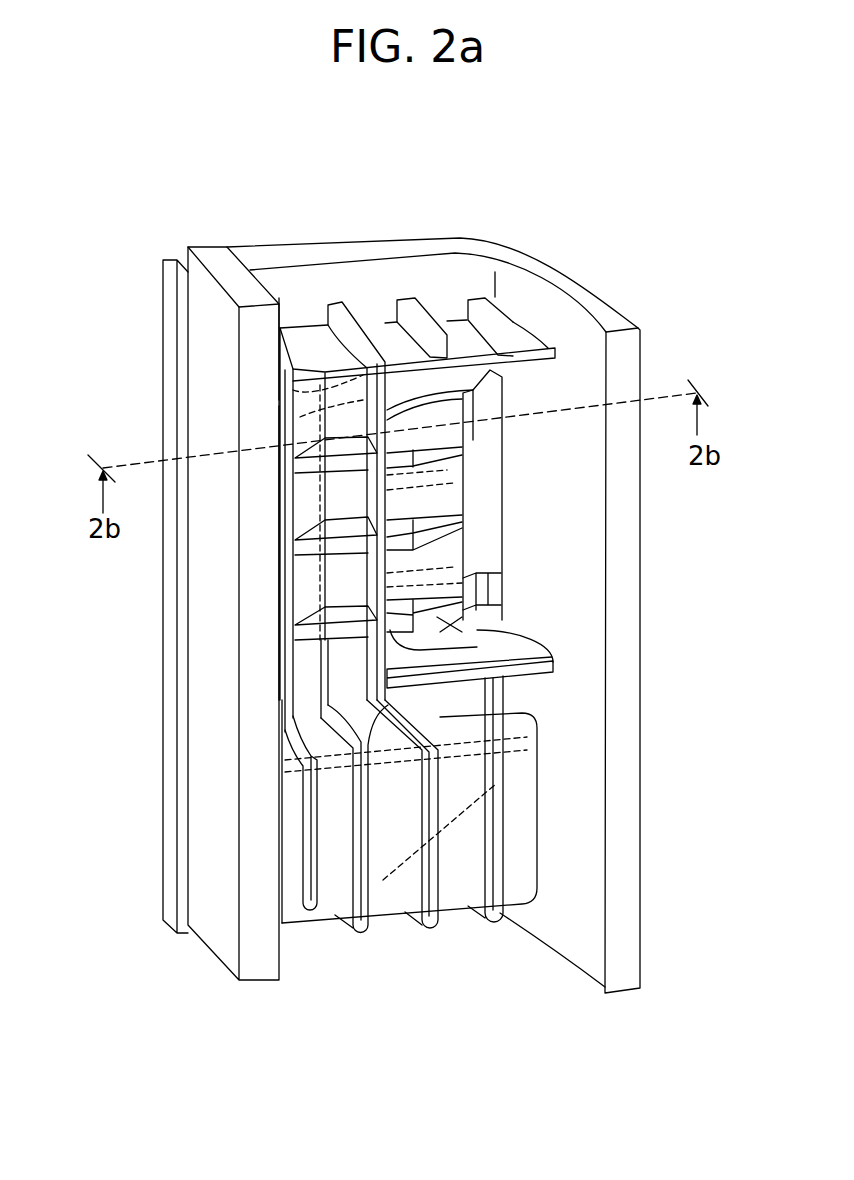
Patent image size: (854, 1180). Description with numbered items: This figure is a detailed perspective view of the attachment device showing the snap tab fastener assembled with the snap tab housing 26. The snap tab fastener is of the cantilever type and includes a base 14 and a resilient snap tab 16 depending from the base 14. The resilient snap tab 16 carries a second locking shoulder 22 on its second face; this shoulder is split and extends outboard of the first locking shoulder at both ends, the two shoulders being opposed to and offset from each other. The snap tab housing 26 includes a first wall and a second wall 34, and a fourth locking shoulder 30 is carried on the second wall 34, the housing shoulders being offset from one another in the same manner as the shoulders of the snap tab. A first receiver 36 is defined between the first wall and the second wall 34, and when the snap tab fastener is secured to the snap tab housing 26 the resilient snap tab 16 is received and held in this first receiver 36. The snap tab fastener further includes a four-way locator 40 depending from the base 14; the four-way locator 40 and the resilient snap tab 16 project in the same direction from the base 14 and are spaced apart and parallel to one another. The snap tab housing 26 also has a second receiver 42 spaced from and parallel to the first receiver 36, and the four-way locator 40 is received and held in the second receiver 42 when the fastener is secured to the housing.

The base 14 is at (205, 724).
The resilient snap tab 16 is at (487, 518).
The second locking shoulder 22 is at (497, 592).
The snap tab housing 26 is at (543, 240).
The fourth locking shoulder 30 is at (502, 603).
The second wall 34 is at (437, 617).
The first receiver 36 is at (278, 403).
The four-way locator 40 is at (383, 880).
The second receiver 42 is at (283, 893).